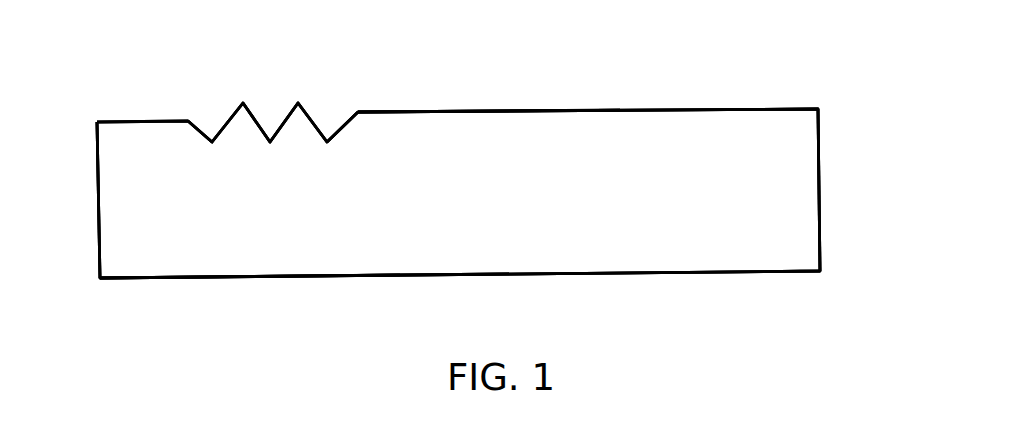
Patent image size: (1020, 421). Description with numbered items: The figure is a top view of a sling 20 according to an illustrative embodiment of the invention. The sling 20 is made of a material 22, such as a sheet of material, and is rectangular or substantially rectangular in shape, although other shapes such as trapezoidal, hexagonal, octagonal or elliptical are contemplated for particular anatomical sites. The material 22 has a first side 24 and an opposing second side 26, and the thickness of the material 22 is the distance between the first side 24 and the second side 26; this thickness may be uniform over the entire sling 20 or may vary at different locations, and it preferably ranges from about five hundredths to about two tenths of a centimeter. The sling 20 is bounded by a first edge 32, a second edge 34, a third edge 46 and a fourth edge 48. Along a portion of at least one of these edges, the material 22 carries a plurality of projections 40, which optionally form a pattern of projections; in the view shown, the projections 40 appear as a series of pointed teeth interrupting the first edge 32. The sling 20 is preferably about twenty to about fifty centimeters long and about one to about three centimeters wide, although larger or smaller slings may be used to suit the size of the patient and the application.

The sling 20 is at (661, 37).
The material 22 is at (672, 273).
The first side 24 is at (653, 128).
The second side 26 is at (472, 244).
The first edge 32 is at (462, 112).
The second edge 34 is at (278, 278).
The plurality of projections 40 is at (298, 103).
The third edge 46 is at (98, 236).
The fourth edge 48 is at (820, 232).